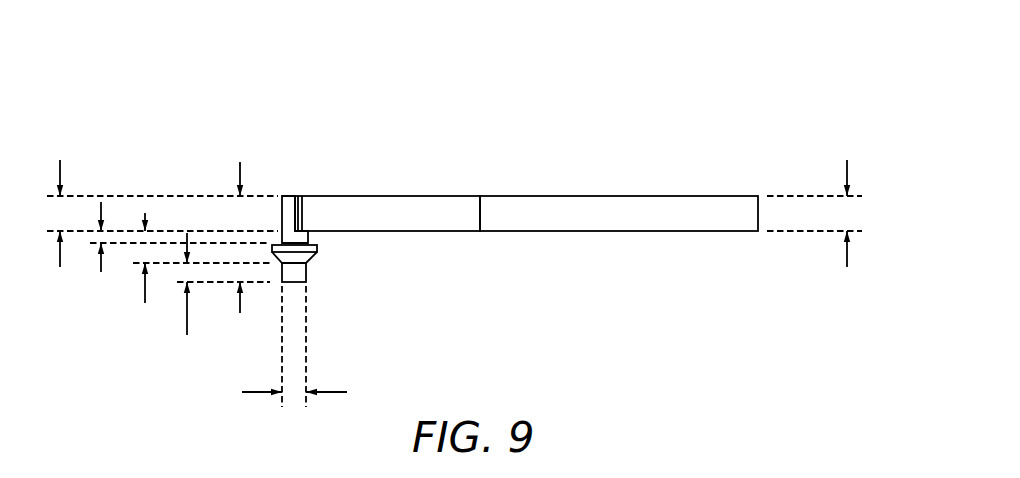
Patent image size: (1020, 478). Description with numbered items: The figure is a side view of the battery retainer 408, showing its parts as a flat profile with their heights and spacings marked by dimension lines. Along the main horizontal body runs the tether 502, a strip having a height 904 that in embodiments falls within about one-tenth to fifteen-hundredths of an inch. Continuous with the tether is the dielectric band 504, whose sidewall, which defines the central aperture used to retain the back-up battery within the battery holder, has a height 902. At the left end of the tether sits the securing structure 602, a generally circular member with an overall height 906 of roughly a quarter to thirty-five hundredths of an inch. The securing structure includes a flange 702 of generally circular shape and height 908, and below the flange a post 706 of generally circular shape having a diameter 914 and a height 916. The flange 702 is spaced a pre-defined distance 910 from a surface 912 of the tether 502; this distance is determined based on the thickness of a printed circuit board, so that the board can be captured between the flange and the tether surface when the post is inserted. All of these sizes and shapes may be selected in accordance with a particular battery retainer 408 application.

The battery retainer 408 is at (548, 136).
The tether 502 is at (382, 188).
The dielectric band 504 is at (674, 185).
The securing structure 602 is at (275, 182).
The flange 702 is at (330, 247).
The post 706 is at (322, 280).
The height of sidewall 902 is at (816, 200).
The height of tether 904 is at (159, 200).
The height of securing structure 906 is at (240, 254).
The height of flange 908 is at (198, 273).
The pre-defined distance 910 is at (176, 252).
The surface of tether 912 is at (438, 231).
The diameter of post 914 is at (317, 346).
The height of post 916 is at (219, 299).